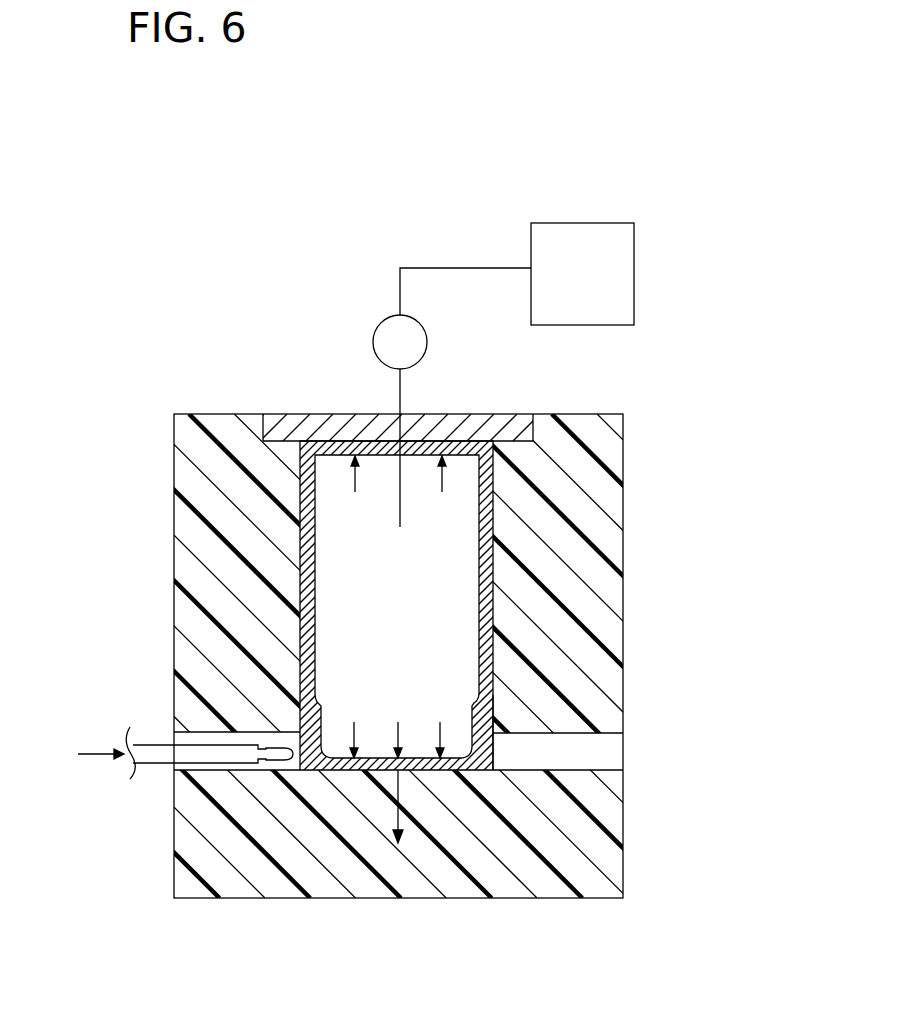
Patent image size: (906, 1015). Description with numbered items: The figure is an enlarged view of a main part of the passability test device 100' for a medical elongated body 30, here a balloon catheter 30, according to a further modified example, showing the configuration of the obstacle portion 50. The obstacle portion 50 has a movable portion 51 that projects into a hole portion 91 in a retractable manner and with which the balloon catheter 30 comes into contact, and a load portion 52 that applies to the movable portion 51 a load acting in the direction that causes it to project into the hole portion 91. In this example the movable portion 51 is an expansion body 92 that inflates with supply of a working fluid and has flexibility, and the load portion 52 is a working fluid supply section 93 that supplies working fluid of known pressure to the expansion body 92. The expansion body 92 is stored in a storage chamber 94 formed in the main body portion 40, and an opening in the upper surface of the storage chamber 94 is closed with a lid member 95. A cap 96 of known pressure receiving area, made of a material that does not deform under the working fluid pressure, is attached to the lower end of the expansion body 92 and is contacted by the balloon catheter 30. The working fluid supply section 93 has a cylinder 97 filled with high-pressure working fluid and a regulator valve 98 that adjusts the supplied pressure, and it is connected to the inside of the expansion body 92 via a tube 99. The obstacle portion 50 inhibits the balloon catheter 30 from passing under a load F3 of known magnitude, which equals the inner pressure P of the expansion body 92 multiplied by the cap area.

The passability test device 100' is at (720, 85).
The obstacle portion 50 is at (324, 108).
The movable portion 51 is at (338, 167).
The load portion 52 is at (395, 167).
The expansion body 92 is at (343, 440).
The working fluid supply section 93 is at (367, 208).
The regulator valve 98 is at (386, 318).
The cylinder 97 is at (530, 252).
The tube 99 is at (486, 270).
The lid member 95 is at (485, 430).
The main body portion 40 is at (171, 560).
The storage chamber 94 is at (493, 578).
The cap 96 is at (489, 748).
The medical elongated body 30 is at (160, 748).
The hole portion 91 is at (175, 766).
The inner pressure P is at (399, 607).
The load F3 is at (399, 790).